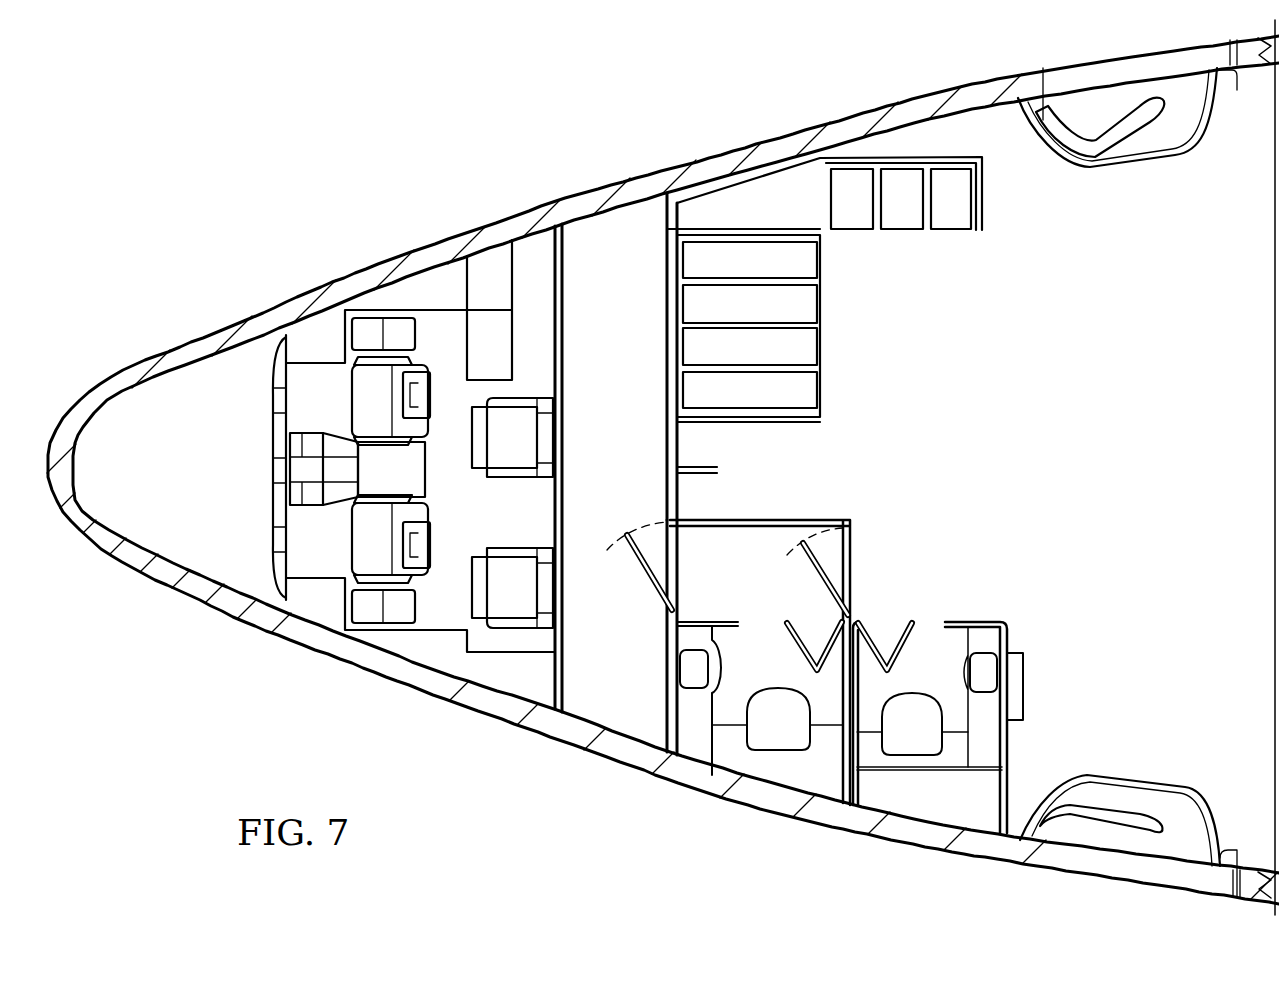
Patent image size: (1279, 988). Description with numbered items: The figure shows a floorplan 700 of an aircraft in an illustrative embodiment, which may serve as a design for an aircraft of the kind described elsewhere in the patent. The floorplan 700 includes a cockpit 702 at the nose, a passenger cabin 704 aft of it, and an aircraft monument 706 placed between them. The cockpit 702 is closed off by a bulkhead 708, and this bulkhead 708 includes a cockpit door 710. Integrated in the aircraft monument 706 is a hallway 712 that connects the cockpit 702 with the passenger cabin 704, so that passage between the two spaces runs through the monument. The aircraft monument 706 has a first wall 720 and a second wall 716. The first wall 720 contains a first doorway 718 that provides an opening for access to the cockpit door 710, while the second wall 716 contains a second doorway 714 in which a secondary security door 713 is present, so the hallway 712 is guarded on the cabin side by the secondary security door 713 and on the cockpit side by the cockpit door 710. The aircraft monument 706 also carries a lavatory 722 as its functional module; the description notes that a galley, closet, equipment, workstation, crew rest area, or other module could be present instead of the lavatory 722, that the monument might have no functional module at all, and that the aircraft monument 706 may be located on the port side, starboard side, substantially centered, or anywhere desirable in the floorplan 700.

The floorplan 700 is at (343, 160).
The cockpit 702 is at (586, 295).
The passenger cabin 704 is at (1150, 328).
The aircraft monument 706 is at (779, 516).
The bulkhead 708 is at (667, 356).
The cockpit door 710 is at (638, 583).
The hallway 712 is at (760, 590).
The secondary security door 713 is at (825, 546).
The second doorway 714 is at (858, 580).
The second wall 716 is at (853, 708).
The first doorway 718 is at (660, 545).
The first wall 720 is at (668, 658).
The lavatory 722 is at (782, 676).